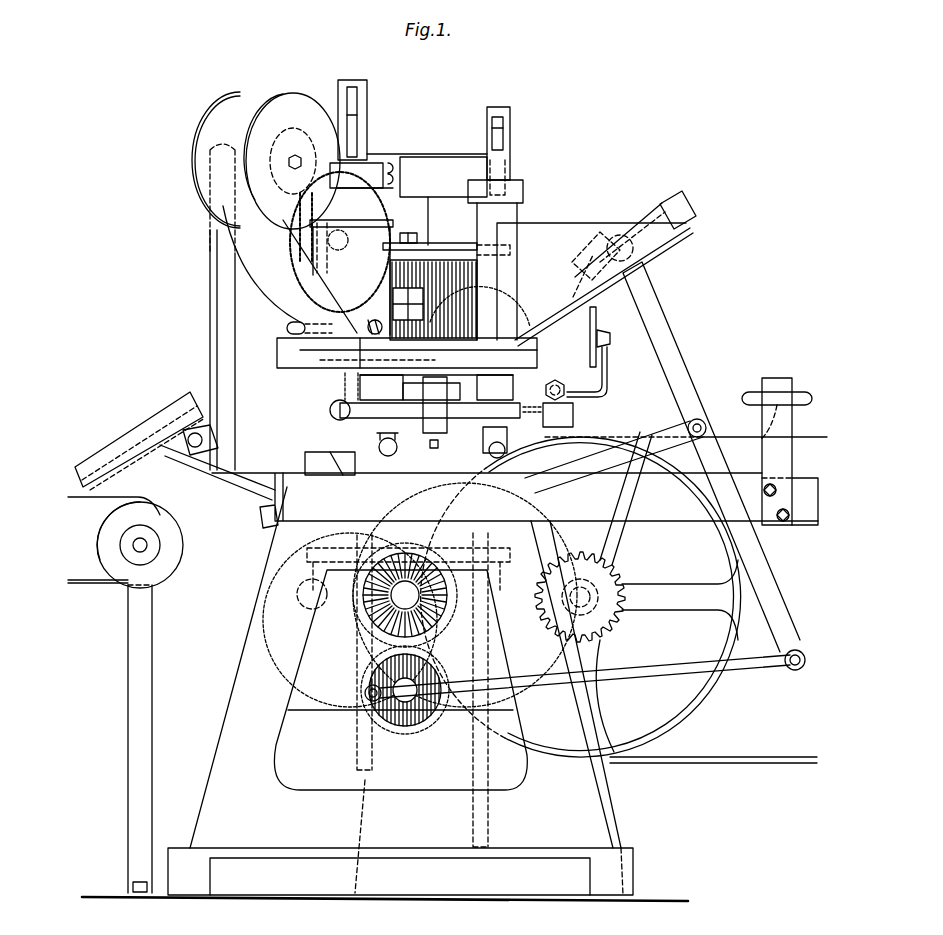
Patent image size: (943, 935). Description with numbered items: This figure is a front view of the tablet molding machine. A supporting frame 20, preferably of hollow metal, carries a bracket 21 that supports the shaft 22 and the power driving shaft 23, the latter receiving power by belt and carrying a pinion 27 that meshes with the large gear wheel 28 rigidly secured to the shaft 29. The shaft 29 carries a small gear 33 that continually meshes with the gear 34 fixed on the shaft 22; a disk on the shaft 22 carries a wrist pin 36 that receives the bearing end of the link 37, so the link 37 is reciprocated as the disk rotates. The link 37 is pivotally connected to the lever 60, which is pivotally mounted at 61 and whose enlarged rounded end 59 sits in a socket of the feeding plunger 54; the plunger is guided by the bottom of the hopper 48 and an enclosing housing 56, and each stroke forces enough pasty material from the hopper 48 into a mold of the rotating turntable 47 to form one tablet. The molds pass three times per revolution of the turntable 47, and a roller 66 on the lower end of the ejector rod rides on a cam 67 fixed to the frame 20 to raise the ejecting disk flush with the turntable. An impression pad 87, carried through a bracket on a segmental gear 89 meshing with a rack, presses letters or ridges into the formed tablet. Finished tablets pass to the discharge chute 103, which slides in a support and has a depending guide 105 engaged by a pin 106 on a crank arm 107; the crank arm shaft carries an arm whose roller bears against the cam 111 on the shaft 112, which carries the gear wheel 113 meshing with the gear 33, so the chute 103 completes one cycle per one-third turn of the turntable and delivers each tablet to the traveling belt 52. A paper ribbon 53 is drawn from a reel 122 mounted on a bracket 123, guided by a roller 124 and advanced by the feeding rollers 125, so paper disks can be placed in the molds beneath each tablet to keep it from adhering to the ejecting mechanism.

The supporting frame 20 is at (603, 832).
The bracket 21 is at (612, 808).
The shaft 22 is at (405, 705).
The power driving shaft 23 is at (620, 625).
The pinion 27 is at (605, 570).
The large gear wheel 28 is at (510, 680).
The shaft 29 is at (405, 588).
The small gear 33 is at (438, 624).
The gear 34 is at (403, 736).
The wrist pin 36 is at (367, 700).
The link 37 is at (748, 668).
The turntable 47 is at (283, 362).
The hopper 48 is at (552, 234).
The traveling belt 52 is at (100, 500).
The paper ribbon 53 is at (274, 258).
The feeding plunger 54 is at (690, 212).
The enclosing housing 56 is at (645, 210).
The enlarged rounded end 59 is at (616, 236).
The lever 60 is at (672, 361).
The pivot 61 is at (702, 425).
The roller 66 is at (378, 445).
The cam 67 is at (305, 458).
The impression pad 87 is at (597, 324).
The segmental gear 89 is at (558, 380).
The discharge chute 103 is at (118, 448).
The depending guide 105 is at (205, 437).
The pin 106 is at (190, 456).
The crank arm 107 is at (252, 494).
The cam 111 is at (385, 545).
The shaft 112 is at (318, 603).
The gear wheel 113 is at (325, 640).
The reel 122 is at (215, 120).
The bracket 123 is at (212, 242).
The roller 124 is at (288, 328).
The feeding rollers 125 is at (440, 348).